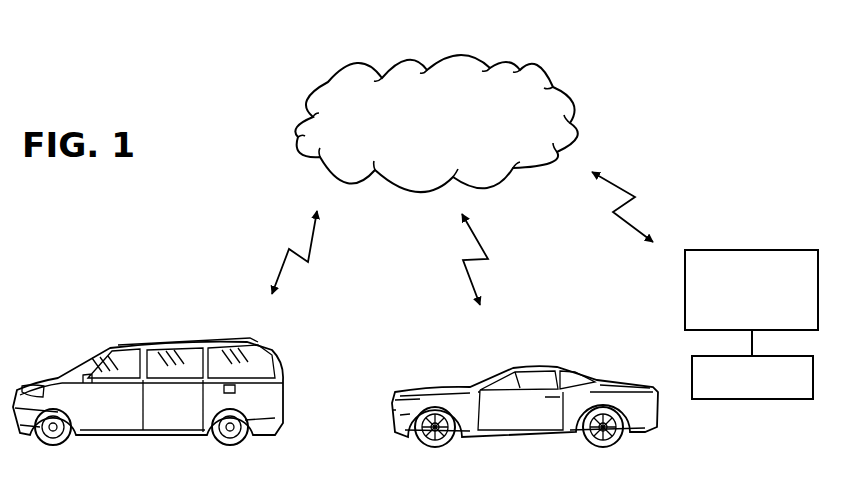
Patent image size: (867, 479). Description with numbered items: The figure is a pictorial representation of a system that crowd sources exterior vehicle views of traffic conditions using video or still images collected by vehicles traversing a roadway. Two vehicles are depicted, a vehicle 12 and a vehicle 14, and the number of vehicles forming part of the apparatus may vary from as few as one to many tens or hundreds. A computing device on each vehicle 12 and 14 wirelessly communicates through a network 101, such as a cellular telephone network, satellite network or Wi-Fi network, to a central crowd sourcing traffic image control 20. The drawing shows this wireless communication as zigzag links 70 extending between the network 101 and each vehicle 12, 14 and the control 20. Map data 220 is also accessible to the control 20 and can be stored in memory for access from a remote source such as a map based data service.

The network 101 is at (338, 66).
The wireless communication links 70 is at (604, 70).
The crowd sourcing traffic image control 20 is at (758, 247).
The map data 220 is at (759, 399).
The vehicle 12 is at (146, 319).
The vehicle 14 is at (426, 368).